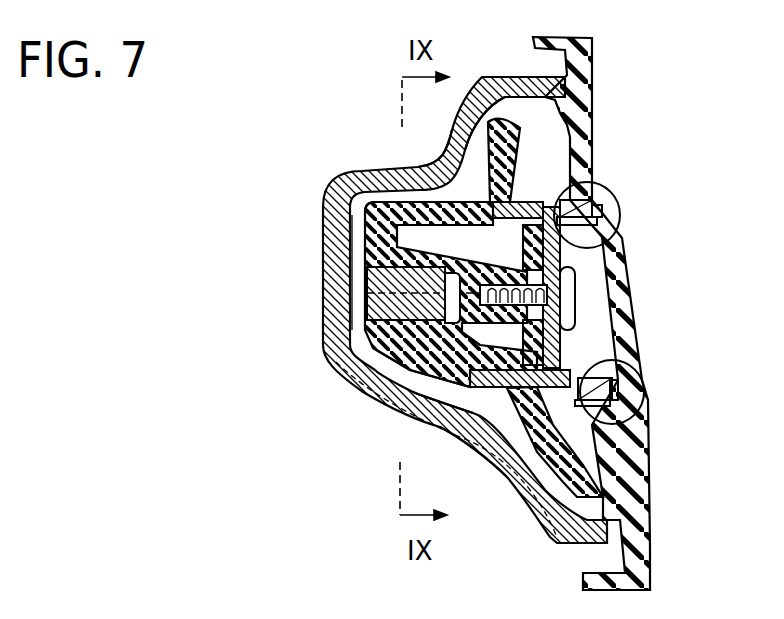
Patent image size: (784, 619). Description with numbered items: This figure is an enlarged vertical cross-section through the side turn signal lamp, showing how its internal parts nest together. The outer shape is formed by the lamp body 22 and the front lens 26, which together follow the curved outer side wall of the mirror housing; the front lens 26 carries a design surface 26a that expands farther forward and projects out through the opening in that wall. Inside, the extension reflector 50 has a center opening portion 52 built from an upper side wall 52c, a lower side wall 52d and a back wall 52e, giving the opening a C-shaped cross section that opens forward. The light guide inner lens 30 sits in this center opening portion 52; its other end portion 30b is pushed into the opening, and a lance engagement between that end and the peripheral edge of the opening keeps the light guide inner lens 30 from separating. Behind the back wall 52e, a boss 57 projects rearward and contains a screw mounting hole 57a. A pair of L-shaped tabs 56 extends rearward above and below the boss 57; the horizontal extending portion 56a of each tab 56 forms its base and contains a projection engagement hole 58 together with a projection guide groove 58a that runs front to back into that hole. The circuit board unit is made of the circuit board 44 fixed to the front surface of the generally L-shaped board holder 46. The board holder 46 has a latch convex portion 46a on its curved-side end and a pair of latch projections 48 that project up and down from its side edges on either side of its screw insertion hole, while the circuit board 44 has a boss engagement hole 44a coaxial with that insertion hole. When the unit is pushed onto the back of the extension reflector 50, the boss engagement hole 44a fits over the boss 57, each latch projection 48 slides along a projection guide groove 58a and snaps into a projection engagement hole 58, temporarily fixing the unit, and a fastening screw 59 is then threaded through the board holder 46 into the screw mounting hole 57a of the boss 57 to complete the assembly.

The lamp body 22 is at (630, 257).
The front lens 26 is at (340, 390).
The design surface 26a is at (325, 305).
The light guide inner lens 30 is at (372, 298).
The other end portion 30b is at (405, 325).
The circuit board 44 is at (507, 387).
The boss engagement hole 44a is at (612, 276).
The board holder 46 is at (600, 345).
The latch convex portion 46a is at (630, 335).
The latch projections 48 is at (540, 197).
The extension reflector 50 is at (350, 222).
The center opening portion 52 is at (372, 312).
The upper side wall 52c is at (338, 217).
The lower side wall 52d is at (378, 388).
The back wall 52e is at (380, 202).
The L-shaped tab 56 is at (620, 213).
The horizontal extending portion 56a is at (473, 423).
The boss 57 is at (478, 215).
The screw mounting hole 57a is at (478, 415).
The projection engagement hole 58 is at (597, 205).
The projection guide groove 58a is at (597, 222).
The fastening screw 59 is at (578, 300).